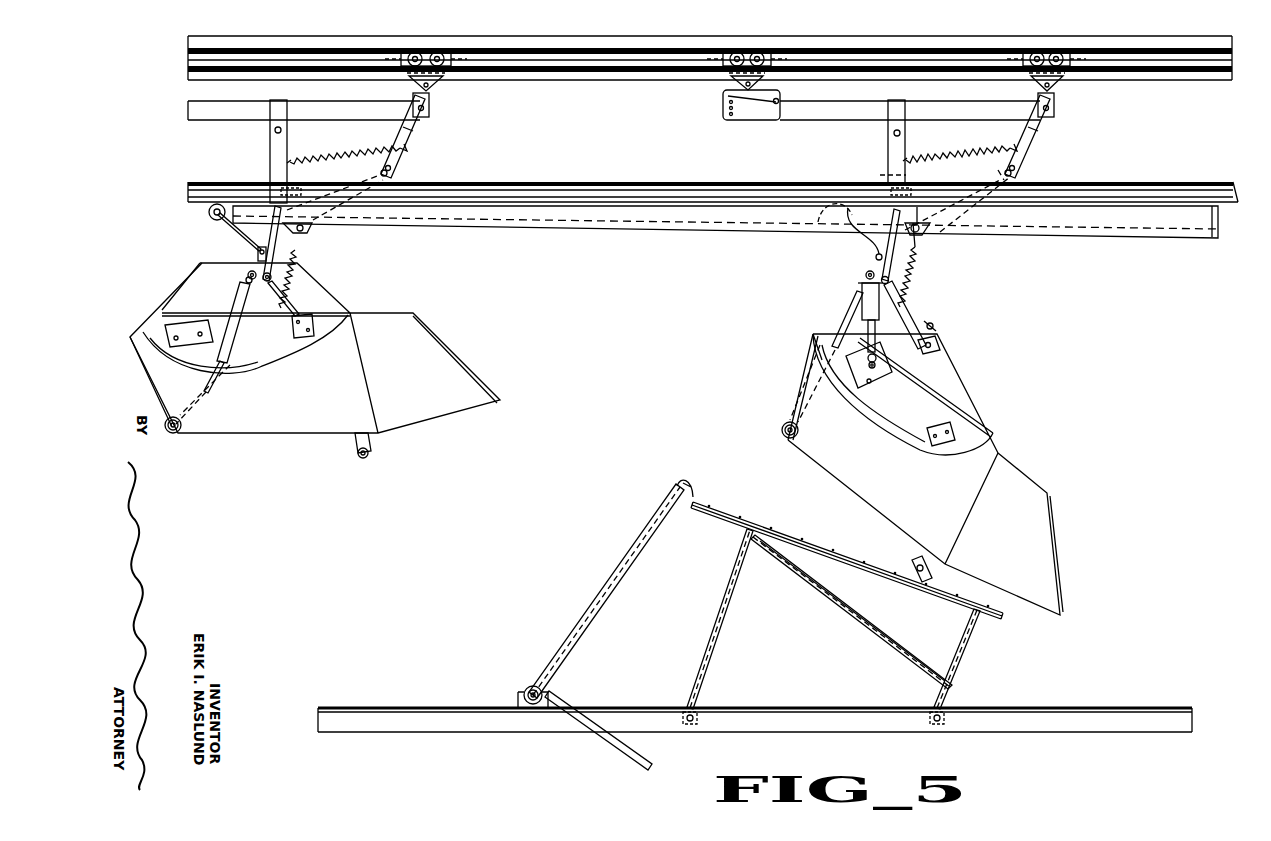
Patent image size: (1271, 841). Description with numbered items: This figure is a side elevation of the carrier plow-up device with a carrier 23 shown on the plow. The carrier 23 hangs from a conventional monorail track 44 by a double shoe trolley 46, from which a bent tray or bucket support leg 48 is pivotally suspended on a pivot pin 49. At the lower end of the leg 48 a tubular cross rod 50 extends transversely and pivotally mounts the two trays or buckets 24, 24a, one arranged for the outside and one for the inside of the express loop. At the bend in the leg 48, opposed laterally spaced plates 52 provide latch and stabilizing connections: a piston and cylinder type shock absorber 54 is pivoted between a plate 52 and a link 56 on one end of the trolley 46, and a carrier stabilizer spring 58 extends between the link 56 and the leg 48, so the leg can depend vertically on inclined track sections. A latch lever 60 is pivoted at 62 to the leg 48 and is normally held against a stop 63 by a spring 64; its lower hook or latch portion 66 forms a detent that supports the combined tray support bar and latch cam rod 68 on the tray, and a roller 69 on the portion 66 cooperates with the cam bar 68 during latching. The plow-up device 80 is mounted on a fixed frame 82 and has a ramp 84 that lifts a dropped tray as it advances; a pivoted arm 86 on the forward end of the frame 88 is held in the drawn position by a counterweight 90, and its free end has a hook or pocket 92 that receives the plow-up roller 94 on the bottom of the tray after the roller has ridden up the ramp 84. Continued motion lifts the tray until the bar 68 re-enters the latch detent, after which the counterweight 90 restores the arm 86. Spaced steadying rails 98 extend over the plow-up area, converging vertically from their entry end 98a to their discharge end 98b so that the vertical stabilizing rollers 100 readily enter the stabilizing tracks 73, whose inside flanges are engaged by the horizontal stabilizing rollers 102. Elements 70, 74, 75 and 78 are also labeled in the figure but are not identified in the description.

The dual carrier 23 is at (380, 298).
The tray or bucket 24 is at (310, 292).
The tray or bucket 24a is at (443, 357).
The monorail track 44 is at (1162, 81).
The double shoe trolley 46 is at (1068, 107).
The tray or bucket support leg 48 is at (888, 153).
The pivot pin 49 is at (893, 134).
The tubular cross rod 50 is at (781, 432).
The laterally spaced plates 52 is at (870, 228).
The carrier stabilizer shock absorber 54 is at (996, 177).
The link 56 is at (1045, 139).
The carrier stabilizer spring 58 is at (976, 148).
The latch lever 60 is at (905, 302).
The latch lever pivot 62 is at (862, 285).
The stop 63 is at (867, 258).
The latch spring 64 is at (914, 271).
The hook or latch portion 66 is at (936, 341).
The combined tray support bar and latch cam rod 68 is at (938, 432).
The latch roller 69 is at (933, 325).
The bracket 70 is at (928, 231).
The stabilizing tracks 73 is at (628, 182).
The switch box 74 is at (740, 114).
The switch lever 75 is at (726, 100).
The mounting plate 78 is at (860, 356).
The plow-up device 80 is at (600, 533).
The fixed frame 82 is at (440, 706).
The ramp 84 is at (795, 520).
The pivoted arm 86 is at (625, 568).
The frame 88 is at (560, 650).
The counterweight 90 is at (632, 743).
The hook or pocket 92 is at (688, 490).
The plow-up roller 94 is at (915, 565).
The steadying rails 98 is at (650, 224).
The entry end 98a is at (1222, 225).
The discharge end 98b is at (222, 220).
The vertical stabilizing rollers 100 is at (790, 222).
The horizontal stabilizing rollers 102 is at (880, 175).